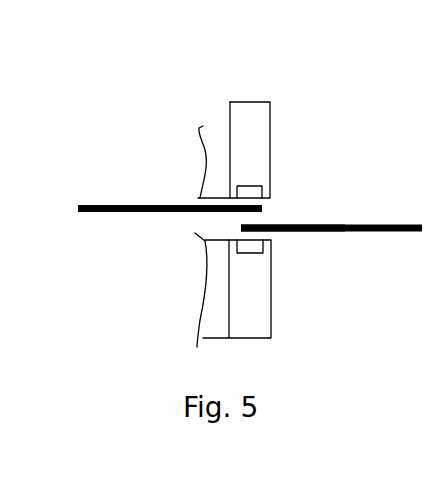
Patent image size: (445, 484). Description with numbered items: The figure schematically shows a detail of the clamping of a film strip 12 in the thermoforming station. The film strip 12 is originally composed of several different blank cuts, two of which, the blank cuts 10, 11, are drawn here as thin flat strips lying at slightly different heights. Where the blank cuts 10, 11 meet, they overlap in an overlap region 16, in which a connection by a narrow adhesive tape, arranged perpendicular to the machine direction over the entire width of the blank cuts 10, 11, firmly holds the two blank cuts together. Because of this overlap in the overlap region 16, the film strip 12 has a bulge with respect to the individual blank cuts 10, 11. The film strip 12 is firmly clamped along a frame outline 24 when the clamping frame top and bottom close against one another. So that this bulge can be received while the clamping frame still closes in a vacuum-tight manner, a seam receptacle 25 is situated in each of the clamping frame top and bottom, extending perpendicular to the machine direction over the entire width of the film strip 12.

The blank cut 10 is at (120, 220).
The blank cut 11 is at (367, 235).
The film strip 12 is at (157, 202).
The overlap region 16 is at (262, 221).
The frame outline 24 is at (238, 142).
The seam receptacle 25 is at (263, 182).